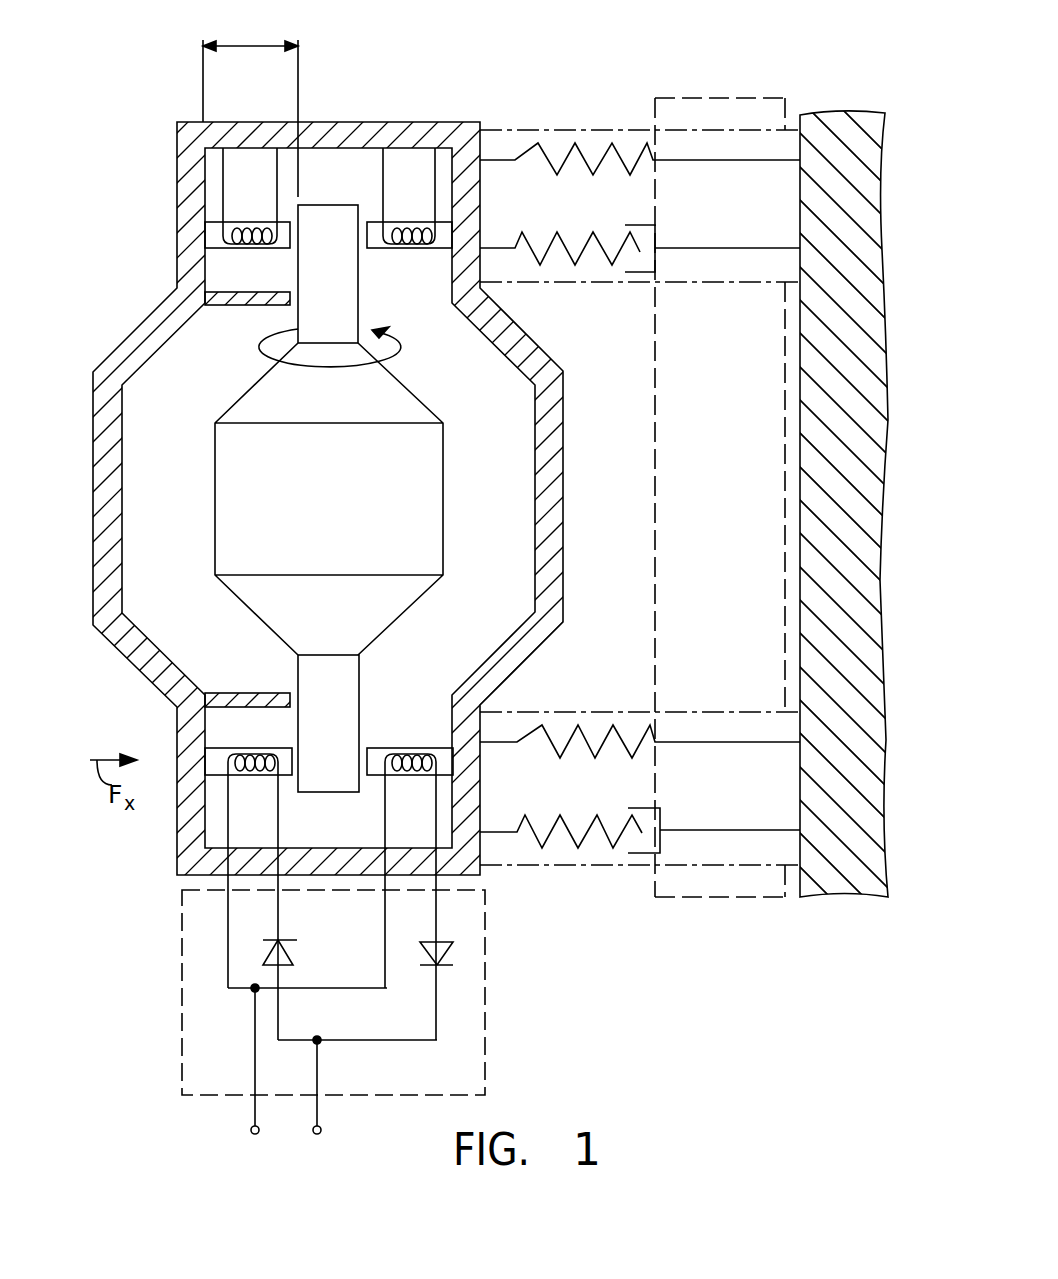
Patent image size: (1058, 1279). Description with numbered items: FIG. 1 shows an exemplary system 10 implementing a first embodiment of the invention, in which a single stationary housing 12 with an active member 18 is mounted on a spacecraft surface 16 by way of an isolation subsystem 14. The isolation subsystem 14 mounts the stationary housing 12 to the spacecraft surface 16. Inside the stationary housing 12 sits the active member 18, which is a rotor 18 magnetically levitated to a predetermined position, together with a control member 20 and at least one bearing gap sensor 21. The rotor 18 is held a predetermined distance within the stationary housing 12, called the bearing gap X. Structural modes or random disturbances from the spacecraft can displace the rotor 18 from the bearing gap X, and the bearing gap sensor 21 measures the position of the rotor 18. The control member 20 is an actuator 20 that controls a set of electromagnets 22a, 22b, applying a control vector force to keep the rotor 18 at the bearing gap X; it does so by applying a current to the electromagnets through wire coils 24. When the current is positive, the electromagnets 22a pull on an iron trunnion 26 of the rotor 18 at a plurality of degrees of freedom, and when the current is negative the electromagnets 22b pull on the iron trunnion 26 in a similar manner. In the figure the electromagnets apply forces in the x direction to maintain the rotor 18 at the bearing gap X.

The system 10 is at (168, 91).
The stationary housing 12 is at (93, 397).
The isolation subsystem 14 is at (735, 899).
The spacecraft surface 16 is at (832, 118).
The active member 18 is at (237, 596).
The control member 20 is at (180, 1018).
The bearing gap sensor 21 is at (235, 307).
The electromagnet 22a is at (235, 263).
The electromagnet 22b is at (390, 249).
The wire coils 24 is at (228, 882).
The iron trunnion 26 is at (360, 283).
The bearing gap X is at (262, 50).